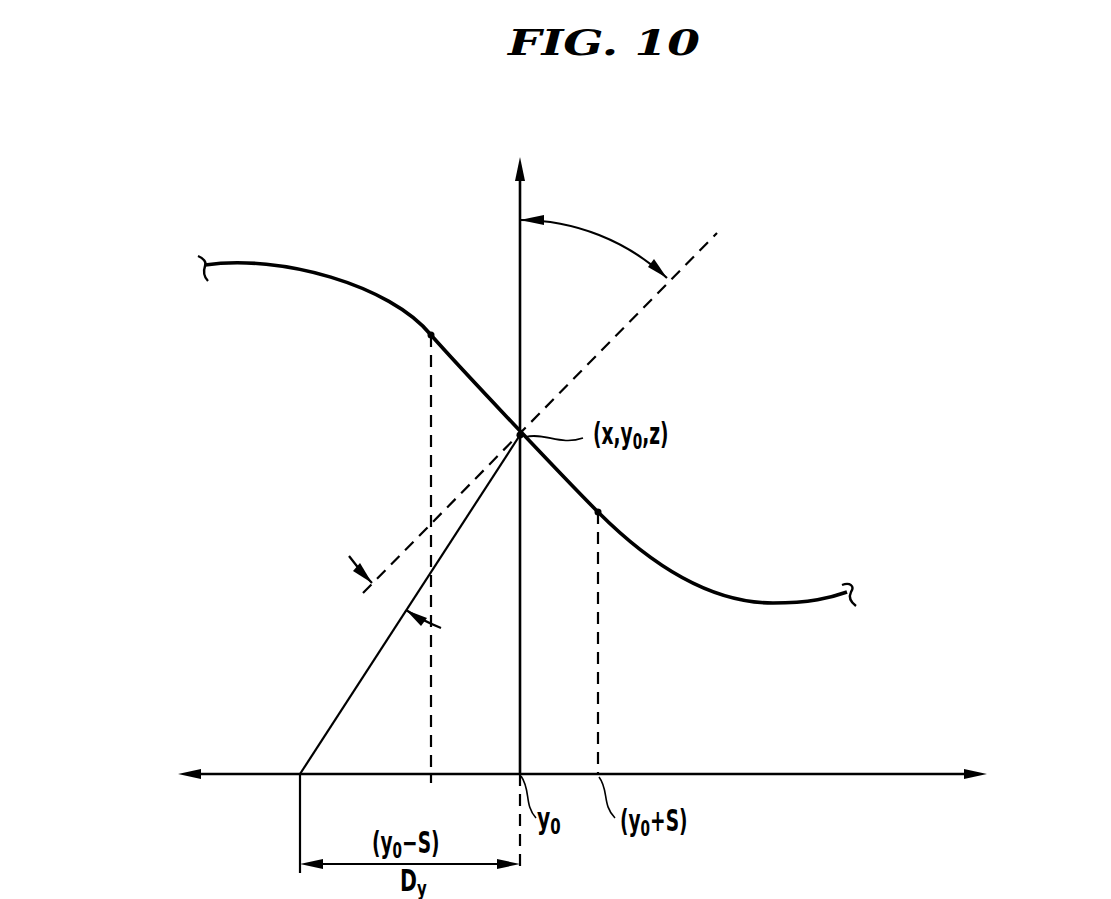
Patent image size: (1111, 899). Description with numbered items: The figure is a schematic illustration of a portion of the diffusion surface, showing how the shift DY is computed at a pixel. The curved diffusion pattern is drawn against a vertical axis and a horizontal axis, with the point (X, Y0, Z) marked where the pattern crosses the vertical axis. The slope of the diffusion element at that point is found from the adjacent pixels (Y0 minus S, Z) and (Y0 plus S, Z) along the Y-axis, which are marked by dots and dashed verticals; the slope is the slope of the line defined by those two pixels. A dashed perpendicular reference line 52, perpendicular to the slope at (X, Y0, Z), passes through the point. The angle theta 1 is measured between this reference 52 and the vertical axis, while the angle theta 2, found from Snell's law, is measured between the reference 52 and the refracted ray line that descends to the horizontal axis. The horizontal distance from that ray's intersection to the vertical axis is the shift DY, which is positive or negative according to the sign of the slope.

The perpendicular reference line 52 is at (697, 252).
The angle theta 1 between perpendicular reference and vertical axis 1 is at (593, 240).
The angle theta 2 between perpendicular reference and chord line 2 is at (395, 592).